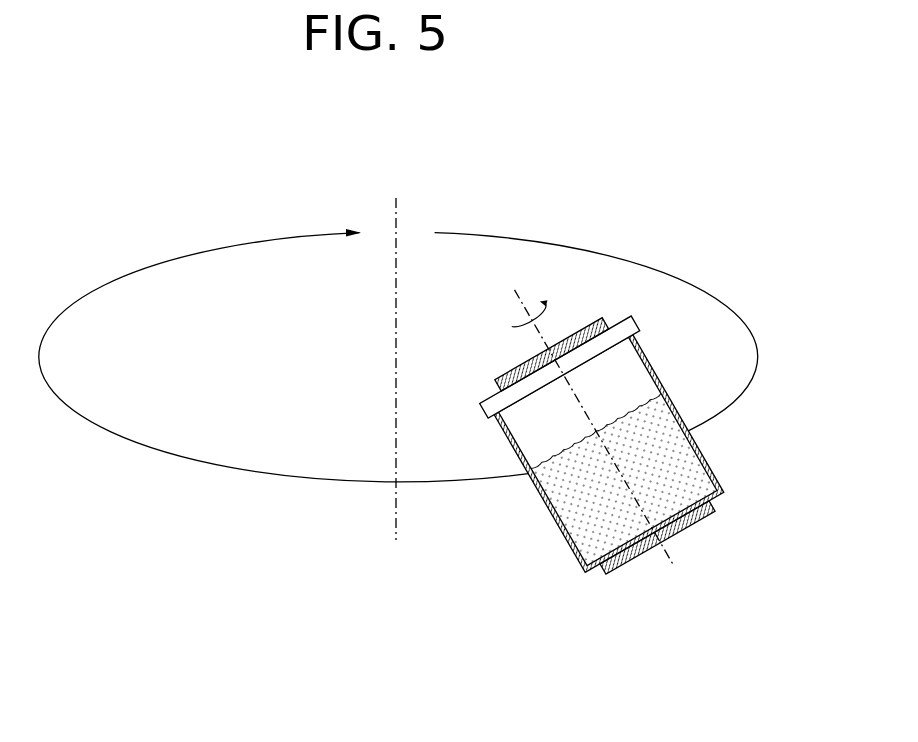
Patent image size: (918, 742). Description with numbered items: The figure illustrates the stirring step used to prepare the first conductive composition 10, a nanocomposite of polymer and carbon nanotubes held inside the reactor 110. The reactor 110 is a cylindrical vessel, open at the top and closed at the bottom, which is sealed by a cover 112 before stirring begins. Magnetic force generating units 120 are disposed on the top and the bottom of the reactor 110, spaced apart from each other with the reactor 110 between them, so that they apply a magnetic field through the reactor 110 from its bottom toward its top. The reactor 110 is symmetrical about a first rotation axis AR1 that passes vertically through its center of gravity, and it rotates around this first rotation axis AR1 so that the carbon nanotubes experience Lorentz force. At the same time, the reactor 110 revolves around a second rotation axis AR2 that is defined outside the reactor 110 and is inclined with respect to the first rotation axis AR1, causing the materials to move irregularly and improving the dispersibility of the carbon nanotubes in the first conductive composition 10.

The second rotation axis AR2 is at (396, 213).
The first rotation axis AR1 is at (655, 560).
The reactor 110 is at (698, 446).
The first conductive composition 10 is at (695, 472).
The cover 112 is at (487, 408).
The magnetic force generating unit 120 is at (497, 384).